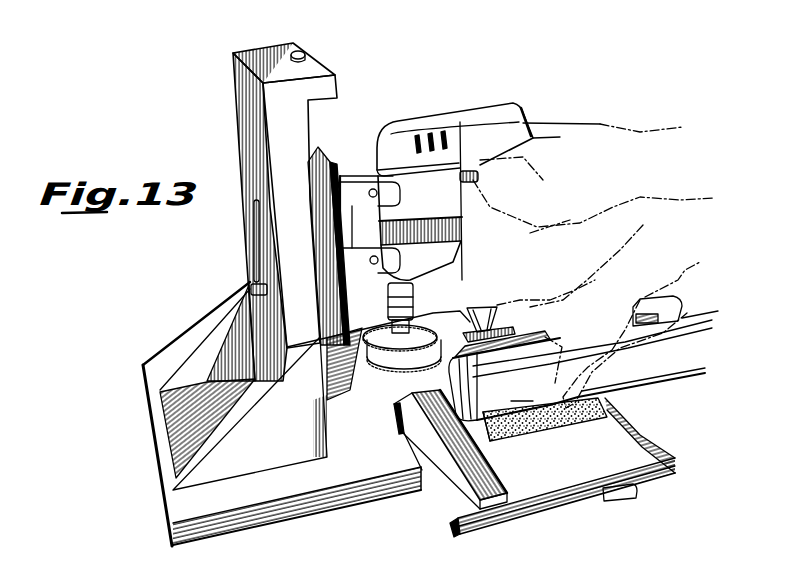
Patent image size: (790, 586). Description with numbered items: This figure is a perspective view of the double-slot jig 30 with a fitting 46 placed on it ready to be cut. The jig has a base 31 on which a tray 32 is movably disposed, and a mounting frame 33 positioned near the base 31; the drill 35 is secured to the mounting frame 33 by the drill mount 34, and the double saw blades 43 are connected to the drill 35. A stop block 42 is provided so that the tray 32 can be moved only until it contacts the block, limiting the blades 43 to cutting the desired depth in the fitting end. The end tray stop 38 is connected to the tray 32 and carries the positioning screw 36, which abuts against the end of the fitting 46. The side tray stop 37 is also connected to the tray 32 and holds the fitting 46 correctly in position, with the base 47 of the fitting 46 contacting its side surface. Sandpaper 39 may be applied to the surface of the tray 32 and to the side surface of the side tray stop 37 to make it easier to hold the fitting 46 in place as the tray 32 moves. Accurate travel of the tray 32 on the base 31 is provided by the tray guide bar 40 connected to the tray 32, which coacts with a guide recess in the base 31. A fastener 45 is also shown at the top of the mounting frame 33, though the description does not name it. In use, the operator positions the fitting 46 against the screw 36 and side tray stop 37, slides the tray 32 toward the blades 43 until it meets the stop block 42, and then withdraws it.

The double-slot jig 30 is at (391, 72).
The base 31 is at (357, 450).
The tray 32 is at (553, 482).
The mounting frame 33 is at (256, 195).
The drill mount 34 is at (353, 175).
The drill 35 is at (480, 108).
The positioning screw 36 is at (413, 440).
The side tray stop 37 is at (473, 304).
The end tray stop 38 is at (453, 510).
The sandpaper 39 is at (570, 420).
The tray guide bar 40 is at (620, 499).
The stop block 42 is at (323, 392).
The double saw blades 43 is at (403, 342).
The bolt 45 is at (307, 54).
The fitting 46 is at (583, 358).
The base of the fitting 47 is at (500, 440).